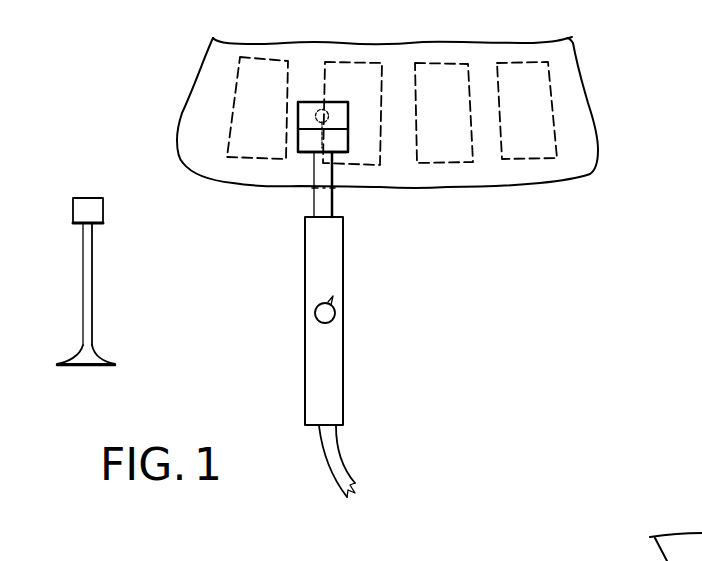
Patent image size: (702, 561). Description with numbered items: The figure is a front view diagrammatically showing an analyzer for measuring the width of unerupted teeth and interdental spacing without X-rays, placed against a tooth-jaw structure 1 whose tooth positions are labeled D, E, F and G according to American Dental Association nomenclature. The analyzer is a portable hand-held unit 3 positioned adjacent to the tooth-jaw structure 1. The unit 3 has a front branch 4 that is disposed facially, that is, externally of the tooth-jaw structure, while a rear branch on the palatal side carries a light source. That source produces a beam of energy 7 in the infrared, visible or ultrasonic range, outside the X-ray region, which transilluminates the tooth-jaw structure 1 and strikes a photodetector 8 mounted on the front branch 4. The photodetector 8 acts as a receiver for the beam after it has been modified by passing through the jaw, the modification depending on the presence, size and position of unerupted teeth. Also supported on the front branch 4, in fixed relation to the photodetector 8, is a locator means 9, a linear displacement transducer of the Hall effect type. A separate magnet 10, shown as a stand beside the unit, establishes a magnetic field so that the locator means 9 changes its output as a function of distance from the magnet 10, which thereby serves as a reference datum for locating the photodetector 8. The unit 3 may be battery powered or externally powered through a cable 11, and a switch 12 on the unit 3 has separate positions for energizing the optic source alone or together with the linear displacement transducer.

The tooth-jaw structure 1 is at (212, 88).
The portable hand-held unit 3 is at (352, 313).
The front branch 4 is at (328, 202).
The beam of energy 7 is at (322, 109).
The photodetector 8 is at (332, 107).
The locator means 9 is at (307, 147).
The magnet 10 is at (80, 212).
The cable 11 is at (334, 458).
The switch 12 is at (315, 316).